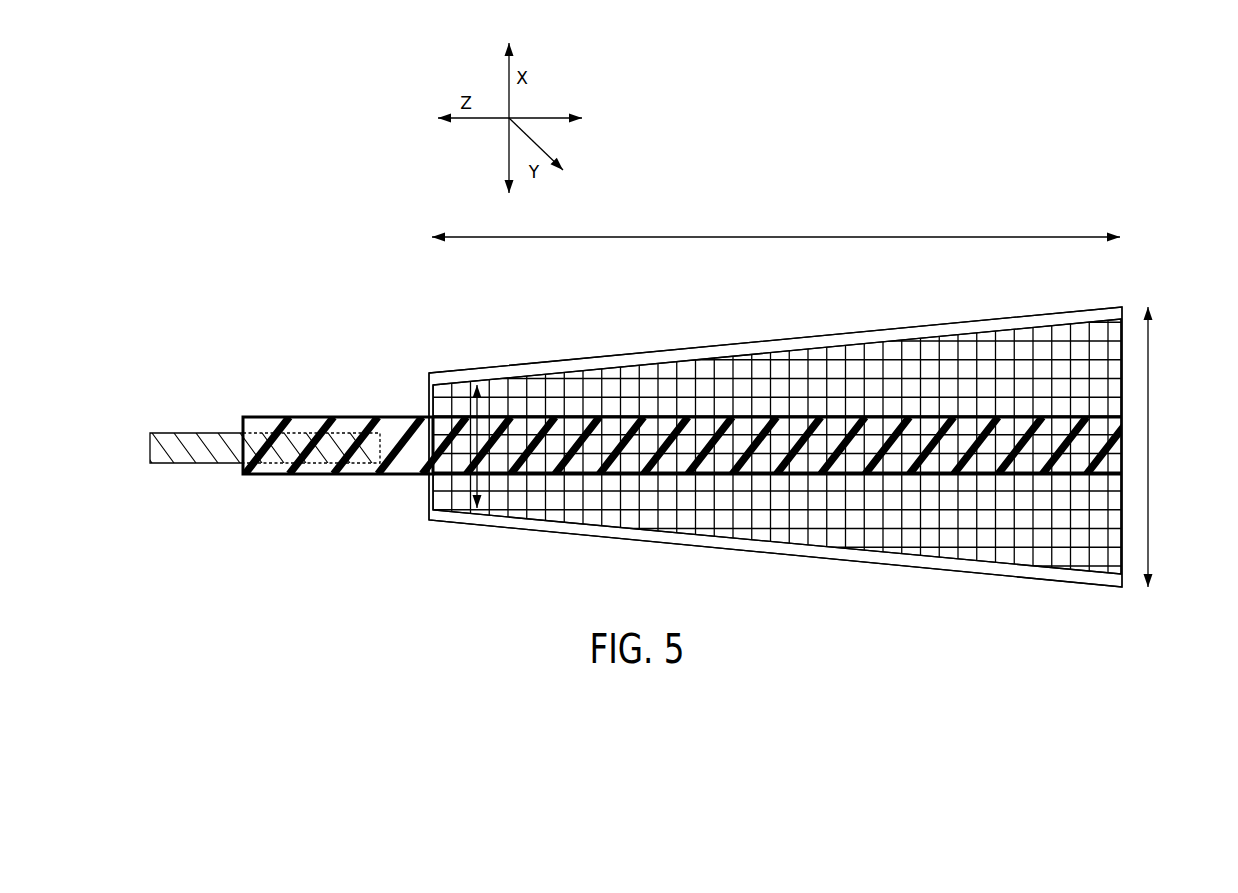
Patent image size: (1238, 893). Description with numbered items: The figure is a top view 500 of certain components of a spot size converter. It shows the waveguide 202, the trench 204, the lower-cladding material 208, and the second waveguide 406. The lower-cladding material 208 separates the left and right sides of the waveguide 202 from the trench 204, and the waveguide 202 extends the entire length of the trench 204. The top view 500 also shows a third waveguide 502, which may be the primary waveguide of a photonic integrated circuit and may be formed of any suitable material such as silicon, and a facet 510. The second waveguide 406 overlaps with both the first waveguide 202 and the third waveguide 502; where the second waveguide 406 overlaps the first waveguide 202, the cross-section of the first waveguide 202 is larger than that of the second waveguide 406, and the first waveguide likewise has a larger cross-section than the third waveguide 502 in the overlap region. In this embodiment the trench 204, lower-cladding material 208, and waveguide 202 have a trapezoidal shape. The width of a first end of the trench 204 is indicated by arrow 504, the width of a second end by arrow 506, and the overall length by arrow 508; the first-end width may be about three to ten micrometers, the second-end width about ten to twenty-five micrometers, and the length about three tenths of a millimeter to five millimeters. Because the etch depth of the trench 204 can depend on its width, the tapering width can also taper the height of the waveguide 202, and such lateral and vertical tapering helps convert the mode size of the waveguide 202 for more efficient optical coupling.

The top view 500 is at (230, 96).
The third waveguide 502 is at (196, 436).
The second waveguide 406 is at (276, 422).
The arrow 504 is at (478, 482).
The arrow 506 is at (1150, 423).
The arrow 508 is at (1045, 236).
The facet 510 is at (1124, 466).
The waveguide 202 is at (1064, 532).
The trench 204 is at (1043, 320).
The lower-cladding material 208 is at (955, 323).